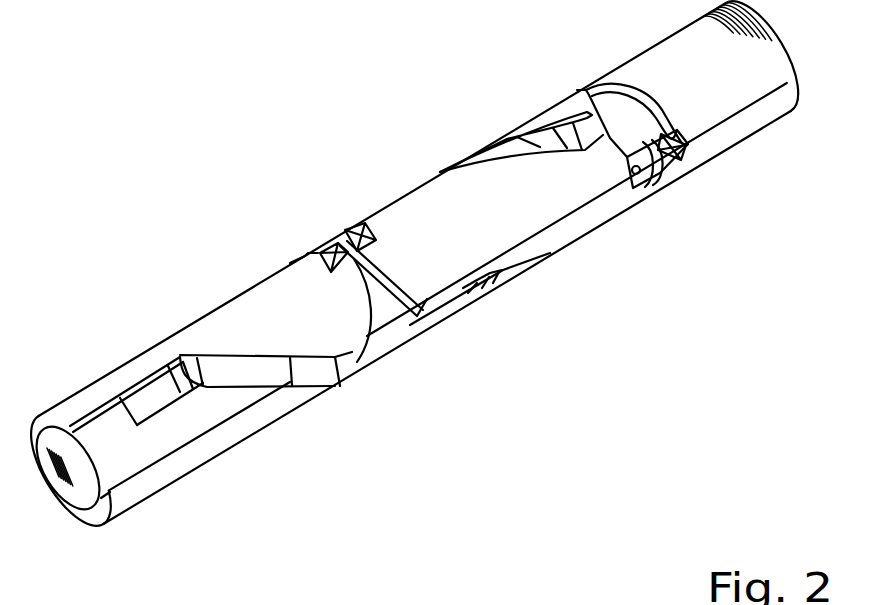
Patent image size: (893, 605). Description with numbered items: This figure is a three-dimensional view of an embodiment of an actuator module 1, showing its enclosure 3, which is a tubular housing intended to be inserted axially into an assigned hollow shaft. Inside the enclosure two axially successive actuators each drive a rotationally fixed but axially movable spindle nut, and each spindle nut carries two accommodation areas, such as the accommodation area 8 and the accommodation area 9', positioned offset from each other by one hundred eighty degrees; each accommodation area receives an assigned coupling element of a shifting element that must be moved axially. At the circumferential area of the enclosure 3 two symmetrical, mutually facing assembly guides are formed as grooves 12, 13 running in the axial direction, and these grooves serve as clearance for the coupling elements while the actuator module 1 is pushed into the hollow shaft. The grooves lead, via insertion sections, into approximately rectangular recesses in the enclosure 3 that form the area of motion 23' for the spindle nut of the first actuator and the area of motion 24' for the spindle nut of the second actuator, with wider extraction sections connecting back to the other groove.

The actuator module 1 is at (283, 415).
The enclosure 3 is at (470, 212).
The accommodation area 8 is at (345, 238).
The accommodation area 9' is at (606, 333).
The groove 12 is at (543, 147).
The groove 13 is at (115, 422).
The area of motion 23' is at (319, 127).
The area of motion 24' is at (649, 335).